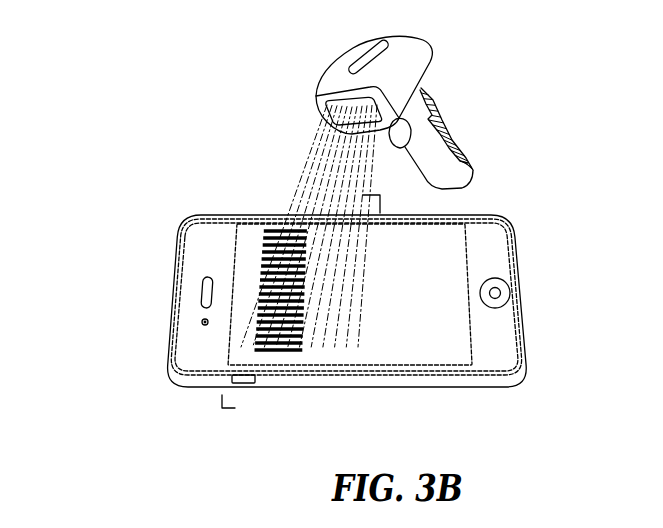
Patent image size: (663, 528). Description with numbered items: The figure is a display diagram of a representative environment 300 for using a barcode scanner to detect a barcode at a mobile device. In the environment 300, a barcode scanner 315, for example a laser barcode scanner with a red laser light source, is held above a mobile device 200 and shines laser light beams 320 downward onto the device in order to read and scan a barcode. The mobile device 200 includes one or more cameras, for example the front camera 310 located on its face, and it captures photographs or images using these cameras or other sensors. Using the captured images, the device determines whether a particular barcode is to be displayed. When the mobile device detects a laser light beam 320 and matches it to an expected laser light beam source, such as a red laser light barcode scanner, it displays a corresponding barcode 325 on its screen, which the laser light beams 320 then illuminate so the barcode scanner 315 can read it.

The representative environment 300 is at (144, 90).
The mobile device 200 is at (333, 388).
The front camera 310 is at (202, 322).
The barcode scanner 315 is at (432, 52).
The laser light beams 320 is at (306, 102).
The barcode 325 is at (268, 360).